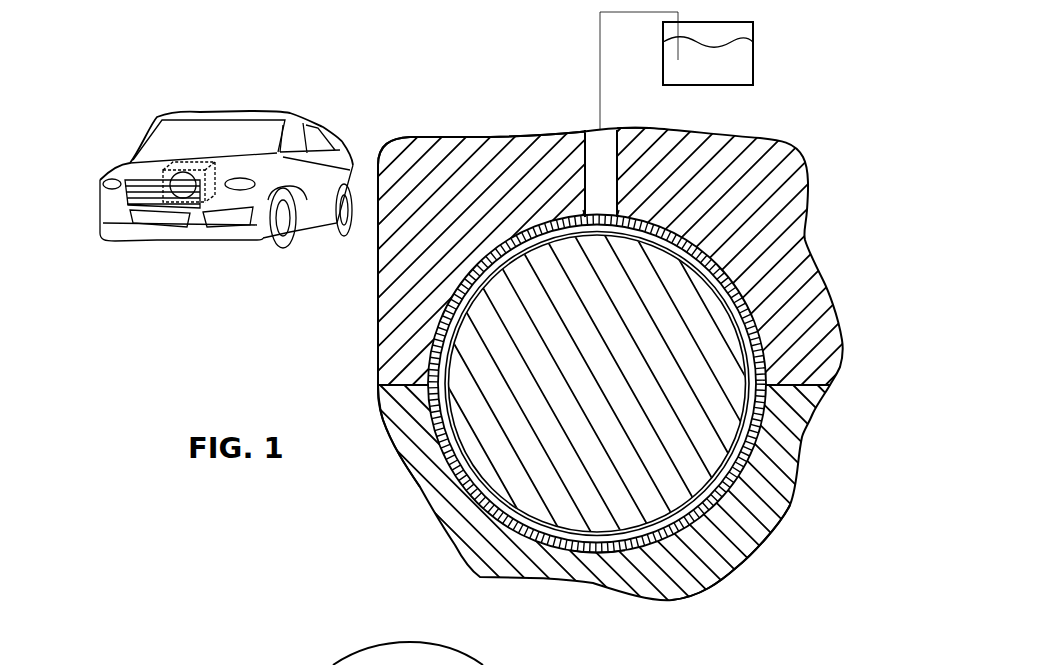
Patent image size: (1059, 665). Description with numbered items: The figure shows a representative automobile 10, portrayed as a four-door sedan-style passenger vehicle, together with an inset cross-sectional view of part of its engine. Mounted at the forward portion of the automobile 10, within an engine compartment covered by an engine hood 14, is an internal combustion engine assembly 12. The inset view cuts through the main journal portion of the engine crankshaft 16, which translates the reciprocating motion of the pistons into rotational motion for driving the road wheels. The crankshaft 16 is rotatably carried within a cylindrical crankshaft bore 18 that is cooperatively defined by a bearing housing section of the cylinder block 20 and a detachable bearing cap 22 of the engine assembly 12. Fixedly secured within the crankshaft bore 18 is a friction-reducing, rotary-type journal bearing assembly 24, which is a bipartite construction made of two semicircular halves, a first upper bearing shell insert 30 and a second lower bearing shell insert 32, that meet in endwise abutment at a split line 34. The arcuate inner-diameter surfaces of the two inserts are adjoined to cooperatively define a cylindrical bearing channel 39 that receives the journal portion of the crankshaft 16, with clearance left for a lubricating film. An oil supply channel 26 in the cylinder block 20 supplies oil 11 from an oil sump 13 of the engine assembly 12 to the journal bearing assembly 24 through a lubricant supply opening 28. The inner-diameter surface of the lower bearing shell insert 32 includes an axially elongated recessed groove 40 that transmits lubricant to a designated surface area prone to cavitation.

The automobile 10 is at (195, 130).
The oil 11 is at (733, 66).
The internal combustion engine assembly 12 is at (474, 130).
The oil sump 13 is at (755, 30).
The engine hood 14 is at (133, 170).
The crankshaft 16 is at (725, 430).
The crankshaft bore 18 is at (727, 552).
The cylinder block 20 is at (767, 236).
The bearing cap 22 is at (760, 508).
The journal bearing assembly 24 is at (413, 365).
The oil supply channel 26 is at (603, 128).
The lubricant supply opening 28 is at (583, 213).
The first bearing shell insert 30 is at (770, 330).
The second bearing shell insert 32 is at (428, 440).
The split line 34 is at (772, 398).
The bearing channel 39 is at (460, 288).
The recessed groove 40 is at (650, 556).